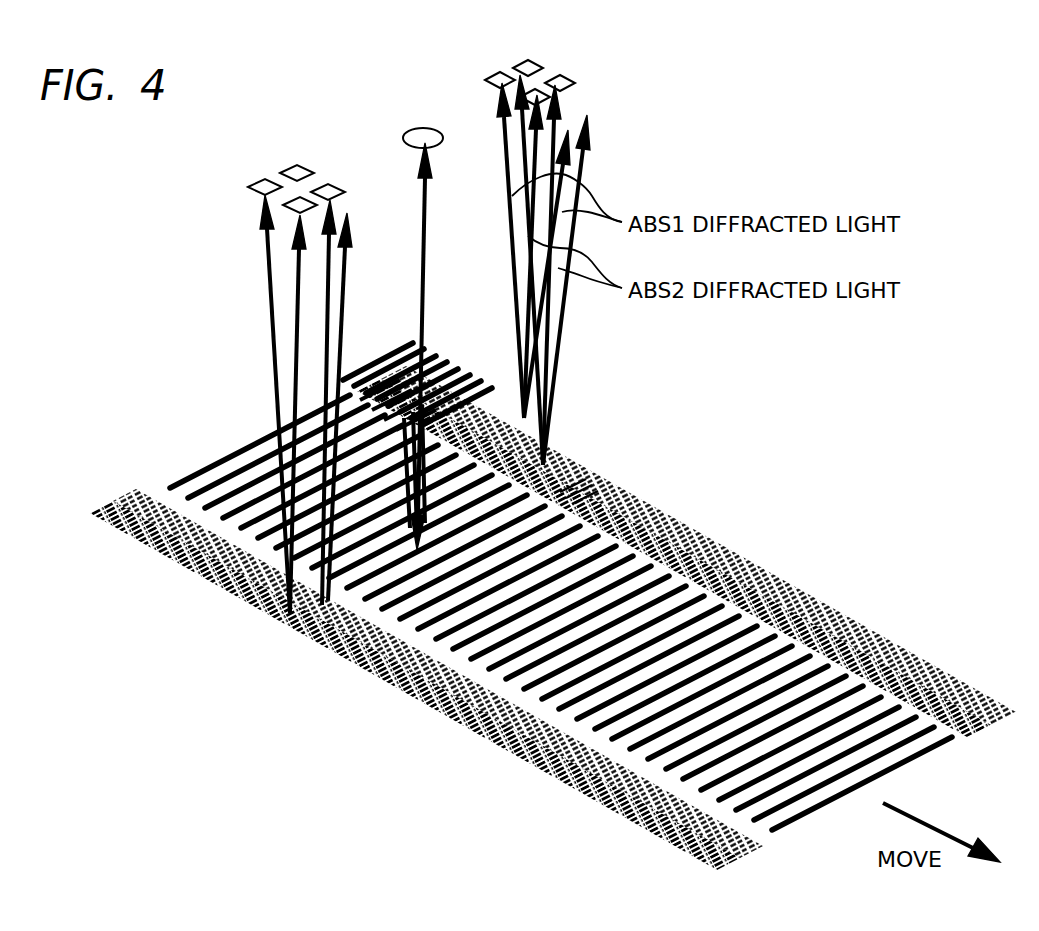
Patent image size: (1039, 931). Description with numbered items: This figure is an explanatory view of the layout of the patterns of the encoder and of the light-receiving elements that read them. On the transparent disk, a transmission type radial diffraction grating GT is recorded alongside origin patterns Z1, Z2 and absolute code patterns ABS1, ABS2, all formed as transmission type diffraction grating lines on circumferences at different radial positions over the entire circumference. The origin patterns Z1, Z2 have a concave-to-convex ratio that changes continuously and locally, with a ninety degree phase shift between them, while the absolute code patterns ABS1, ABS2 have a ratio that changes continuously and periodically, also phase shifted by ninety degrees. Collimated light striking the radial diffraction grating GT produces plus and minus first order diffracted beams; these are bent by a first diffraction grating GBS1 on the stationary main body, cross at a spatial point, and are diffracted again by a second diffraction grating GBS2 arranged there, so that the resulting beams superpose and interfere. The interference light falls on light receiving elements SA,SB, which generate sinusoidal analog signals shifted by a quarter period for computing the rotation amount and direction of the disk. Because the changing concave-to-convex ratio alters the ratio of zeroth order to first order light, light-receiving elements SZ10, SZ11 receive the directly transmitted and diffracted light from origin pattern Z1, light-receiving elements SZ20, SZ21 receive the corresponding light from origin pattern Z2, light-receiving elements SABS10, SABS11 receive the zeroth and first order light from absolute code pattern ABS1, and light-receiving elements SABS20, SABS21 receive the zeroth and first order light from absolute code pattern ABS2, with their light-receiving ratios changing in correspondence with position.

The origin pattern Z1 is at (132, 488).
The origin pattern Z2 is at (103, 507).
The radial diffraction grating GT is at (233, 456).
The first diffraction grating GBS1 is at (585, 488).
The second diffraction grating GBS2 is at (491, 374).
The absolute code pattern ABS1 is at (748, 570).
The absolute code pattern ABS2 is at (790, 592).
The light-receiving element SZ10 is at (337, 190).
The light-receiving element SZ11 is at (294, 170).
The light-receiving element SZ20 is at (282, 210).
The light-receiving element SZ21 is at (264, 184).
The light-receiving element SABS10 is at (576, 83).
The light-receiving element SABS11 is at (532, 66).
The light-receiving element SABS20 is at (518, 97).
The light-receiving element SABS21 is at (496, 74).
The light receiving elements SA,SB is at (356, 89).